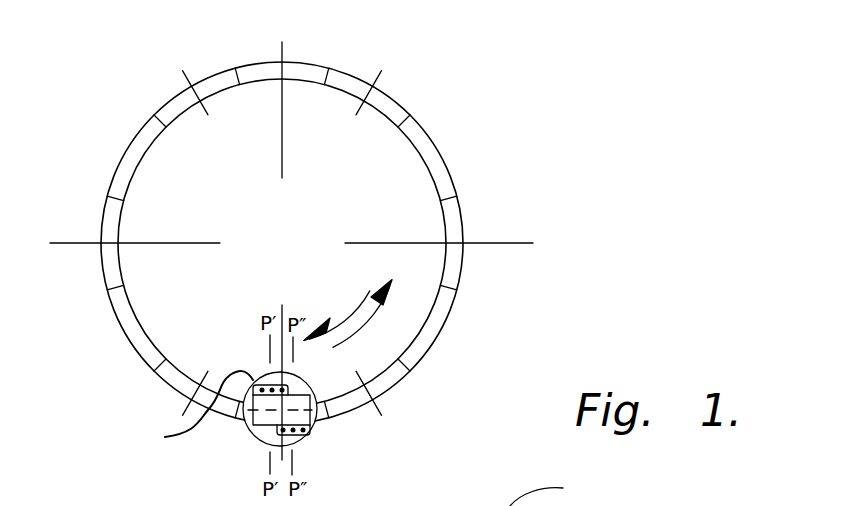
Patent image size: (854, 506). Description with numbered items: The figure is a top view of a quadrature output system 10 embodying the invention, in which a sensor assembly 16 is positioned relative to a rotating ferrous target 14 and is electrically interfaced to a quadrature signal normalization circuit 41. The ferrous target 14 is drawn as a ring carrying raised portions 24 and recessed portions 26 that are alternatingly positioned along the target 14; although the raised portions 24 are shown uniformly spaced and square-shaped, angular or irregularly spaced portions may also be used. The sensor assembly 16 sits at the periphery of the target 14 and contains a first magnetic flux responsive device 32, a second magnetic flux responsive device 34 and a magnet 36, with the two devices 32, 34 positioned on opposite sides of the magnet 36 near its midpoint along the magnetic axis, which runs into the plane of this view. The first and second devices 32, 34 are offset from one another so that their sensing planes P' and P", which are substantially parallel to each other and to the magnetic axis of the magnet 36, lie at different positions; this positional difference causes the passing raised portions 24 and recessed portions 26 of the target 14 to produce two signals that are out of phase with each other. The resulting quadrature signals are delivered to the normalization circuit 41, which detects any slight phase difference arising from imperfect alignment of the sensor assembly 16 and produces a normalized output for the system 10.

The quadrature output system 10 is at (540, 66).
The ferrous target 14 is at (462, 340).
The sensor assembly 16 is at (308, 459).
The raised portions 24 is at (462, 265).
The recessed portions 26 is at (440, 153).
The first magnetic flux responsive device 32 is at (190, 413).
The second magnetic flux responsive device 34 is at (310, 437).
The magnet 36 is at (313, 418).
The quadrature signal normalization circuit 41 is at (556, 491).